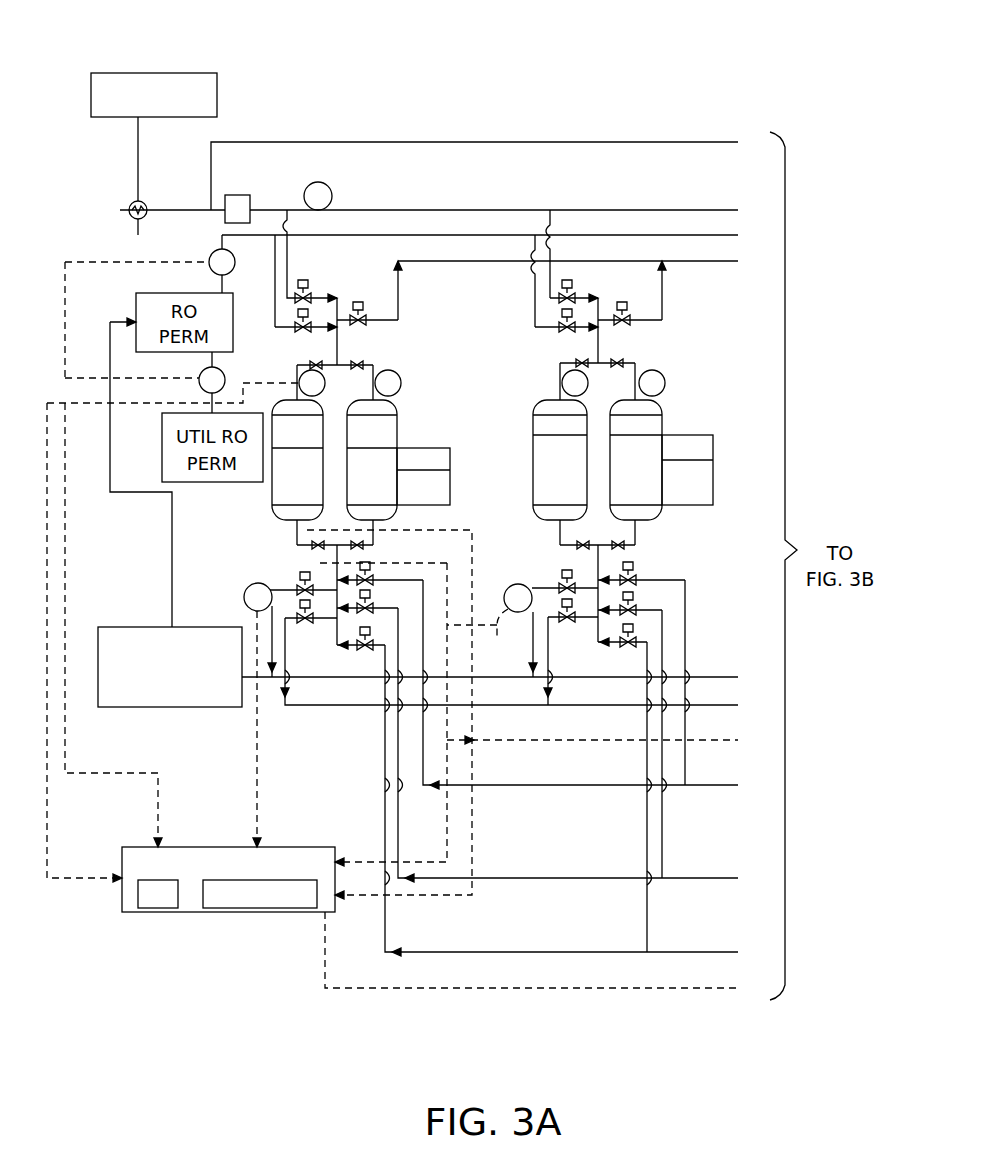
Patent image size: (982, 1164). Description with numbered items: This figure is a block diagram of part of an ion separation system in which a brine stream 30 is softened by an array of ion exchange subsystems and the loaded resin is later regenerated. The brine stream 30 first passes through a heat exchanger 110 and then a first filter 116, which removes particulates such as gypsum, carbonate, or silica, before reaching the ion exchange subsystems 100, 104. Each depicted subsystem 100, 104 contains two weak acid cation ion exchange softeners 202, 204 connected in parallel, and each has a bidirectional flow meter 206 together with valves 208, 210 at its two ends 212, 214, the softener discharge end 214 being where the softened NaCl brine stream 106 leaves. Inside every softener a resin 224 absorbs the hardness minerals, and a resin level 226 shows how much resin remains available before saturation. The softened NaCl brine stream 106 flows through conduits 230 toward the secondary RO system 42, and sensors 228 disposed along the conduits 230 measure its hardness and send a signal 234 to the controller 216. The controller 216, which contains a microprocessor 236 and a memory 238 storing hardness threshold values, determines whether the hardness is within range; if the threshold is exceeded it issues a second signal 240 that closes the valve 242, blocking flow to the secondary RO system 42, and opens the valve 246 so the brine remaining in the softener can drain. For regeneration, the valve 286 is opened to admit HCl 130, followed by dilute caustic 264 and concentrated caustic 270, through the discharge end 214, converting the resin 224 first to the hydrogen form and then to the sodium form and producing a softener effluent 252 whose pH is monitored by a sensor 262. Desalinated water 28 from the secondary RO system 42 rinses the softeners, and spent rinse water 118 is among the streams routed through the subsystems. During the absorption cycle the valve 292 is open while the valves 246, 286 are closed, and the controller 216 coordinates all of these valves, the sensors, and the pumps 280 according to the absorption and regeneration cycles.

The desalinated water 28 is at (348, 237).
The brine stream 30 is at (152, 73).
The secondary RO system 42 is at (144, 627).
The ion exchange subsystem 100 is at (490, 405).
The ion exchange subsystem 104 is at (440, 432).
The softened NaCl brine stream 106 is at (708, 676).
The heat exchanger 110 is at (146, 203).
The first filter 116 is at (238, 195).
The spent rinse water 118 is at (365, 142).
The HCl 130 is at (423, 653).
The ion exchange softeners 202 is at (535, 419).
The ion exchange softeners 204 is at (325, 413).
The bidirectional flow meter 206 is at (298, 382).
The valve 208 is at (314, 362).
The valve 210 is at (357, 542).
The end 212 is at (413, 378).
The softener discharge end 214 is at (408, 515).
The controller 216 is at (124, 847).
The resin 224 is at (443, 465).
The resin level 226 is at (452, 470).
The sensors 228 is at (244, 598).
The conduits 230 is at (333, 565).
The signal 234 is at (365, 858).
The microprocessor 236 is at (140, 908).
The memory 238 is at (208, 908).
The second signal 240 is at (415, 897).
The valve 242 is at (297, 586).
The valve 246 is at (317, 618).
The softener effluent 252 is at (400, 302).
The sensor 262 is at (333, 190).
The dilute caustic 264 is at (383, 786).
The concentrated caustic 270 is at (400, 850).
The pumps 280 is at (212, 253).
The valve 286 is at (360, 306).
The valve 292 is at (308, 288).